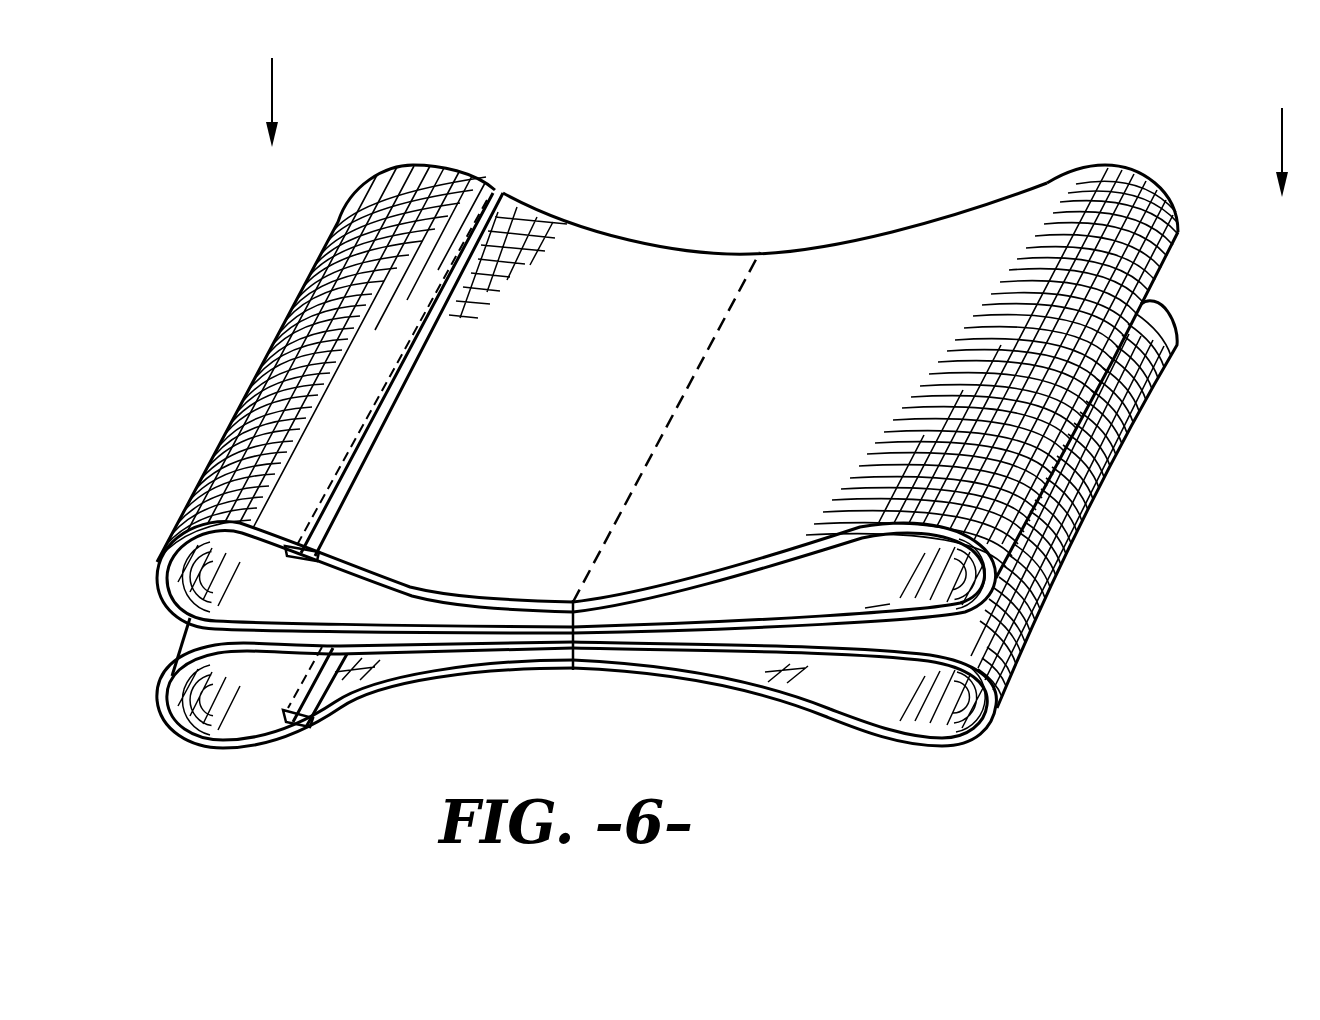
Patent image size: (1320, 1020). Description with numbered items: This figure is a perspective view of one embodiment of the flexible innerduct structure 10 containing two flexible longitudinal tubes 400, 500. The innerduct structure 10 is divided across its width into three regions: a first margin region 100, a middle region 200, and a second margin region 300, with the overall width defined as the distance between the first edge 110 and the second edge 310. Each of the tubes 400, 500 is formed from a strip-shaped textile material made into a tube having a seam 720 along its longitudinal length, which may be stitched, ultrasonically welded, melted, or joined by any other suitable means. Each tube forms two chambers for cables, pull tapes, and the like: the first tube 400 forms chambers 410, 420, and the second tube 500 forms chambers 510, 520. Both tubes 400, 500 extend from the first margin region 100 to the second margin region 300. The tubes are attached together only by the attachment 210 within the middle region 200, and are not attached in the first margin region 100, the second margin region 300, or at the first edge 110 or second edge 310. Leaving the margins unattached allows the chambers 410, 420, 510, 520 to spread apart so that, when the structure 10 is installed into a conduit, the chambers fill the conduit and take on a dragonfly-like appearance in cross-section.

The innerduct structure 10 is at (185, 248).
The first margin region 100 is at (675, 115).
The first edge 110 is at (280, 85).
The middle region 200 is at (865, 178).
The attachment 210 is at (677, 413).
The second margin region 300 is at (1212, 127).
The second edge 310 is at (1284, 132).
The flexible longitudinal tube 400 is at (1150, 228).
The chamber 410 is at (290, 596).
The chamber 420 is at (895, 592).
The flexible longitudinal tube 500 is at (1150, 375).
The chamber 510 is at (282, 700).
The chamber 520 is at (895, 700).
The seam 720 is at (497, 186).